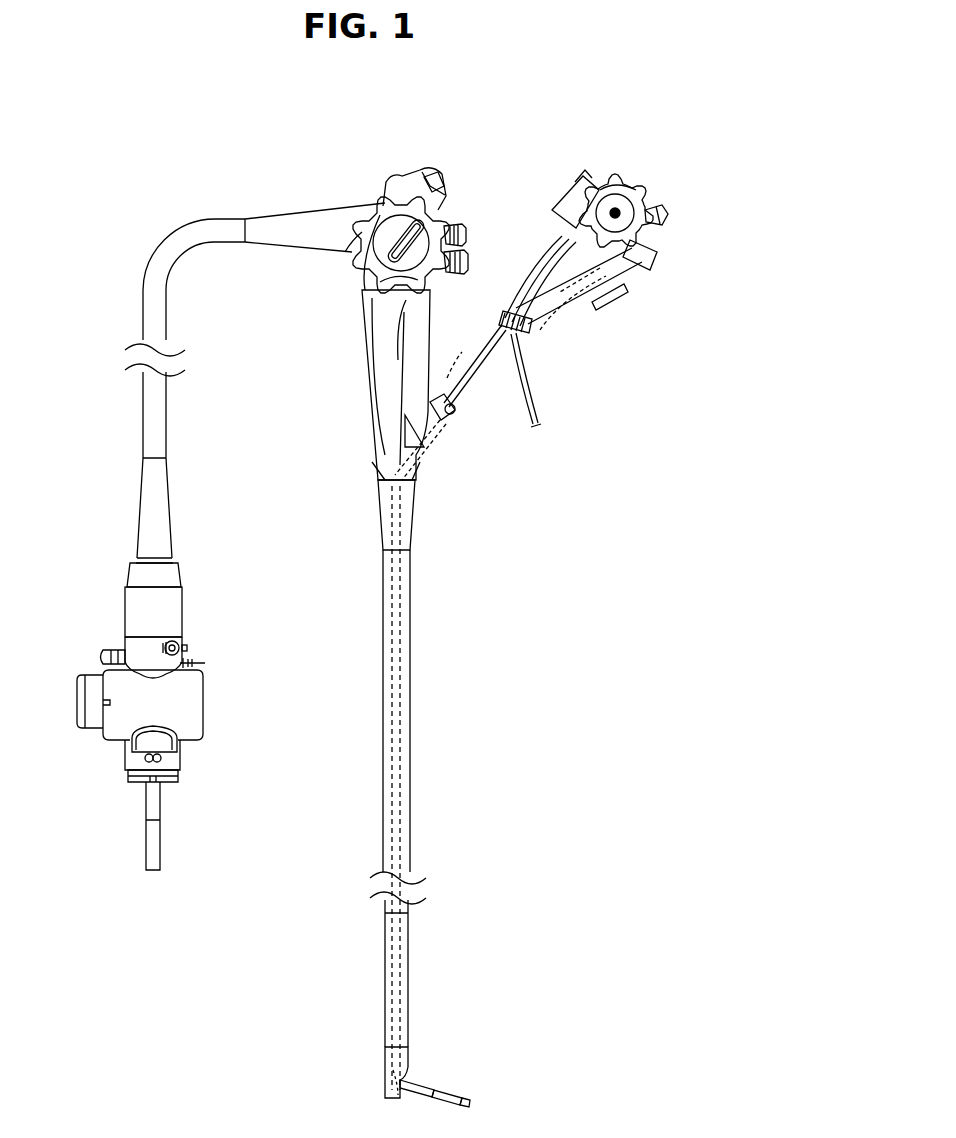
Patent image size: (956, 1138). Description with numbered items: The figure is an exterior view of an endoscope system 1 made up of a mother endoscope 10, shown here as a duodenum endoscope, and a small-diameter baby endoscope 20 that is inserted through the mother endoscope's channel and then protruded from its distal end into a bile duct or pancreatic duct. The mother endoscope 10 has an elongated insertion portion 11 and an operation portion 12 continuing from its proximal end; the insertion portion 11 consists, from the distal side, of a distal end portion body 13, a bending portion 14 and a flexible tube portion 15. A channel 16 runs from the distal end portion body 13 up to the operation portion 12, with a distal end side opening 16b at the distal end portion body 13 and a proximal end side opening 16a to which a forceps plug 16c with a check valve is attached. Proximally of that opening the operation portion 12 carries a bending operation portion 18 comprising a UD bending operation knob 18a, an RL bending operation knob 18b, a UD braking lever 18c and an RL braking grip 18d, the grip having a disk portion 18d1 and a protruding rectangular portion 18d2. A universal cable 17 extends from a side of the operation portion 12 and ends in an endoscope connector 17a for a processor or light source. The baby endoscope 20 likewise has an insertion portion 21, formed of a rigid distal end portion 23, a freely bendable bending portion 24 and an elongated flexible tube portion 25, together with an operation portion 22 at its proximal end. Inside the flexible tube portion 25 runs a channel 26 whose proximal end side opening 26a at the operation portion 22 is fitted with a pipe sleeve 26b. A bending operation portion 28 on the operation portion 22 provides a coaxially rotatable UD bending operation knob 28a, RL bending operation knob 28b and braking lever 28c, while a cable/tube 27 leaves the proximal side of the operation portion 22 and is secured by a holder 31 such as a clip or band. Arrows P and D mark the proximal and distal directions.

The endoscope system 1 is at (291, 150).
The mother endoscope 10 is at (486, 232).
The insertion portion 11 is at (376, 799).
The operation portion 12 is at (370, 388).
The distal end portion body 13 is at (382, 1070).
The bending portion 14 is at (382, 978).
The flexible tube portion 15 is at (380, 762).
The channel 16 is at (410, 700).
The proximal end side opening 16a is at (448, 384).
The distal end side opening 16b is at (356, 1094).
The forceps plug 16c is at (462, 414).
The universal cable 17 is at (142, 320).
The endoscope connector 17a is at (124, 619).
The bending operation portion 18 is at (370, 248).
The UD bending operation knob 18a is at (372, 236).
The RL bending operation knob 18b is at (378, 260).
The UD braking lever 18c is at (446, 262).
The RL braking grip 18d is at (398, 265).
The disk portion 18d1 is at (432, 278).
The rectangular portion 18d2 is at (425, 195).
The baby endoscope 20 is at (637, 167).
The insertion portion 21 is at (469, 1048).
The operation portion 22 is at (536, 330).
The distal end portion 23 is at (489, 1076).
The bending portion 24 is at (461, 1094).
The flexible tube portion 25 is at (468, 392).
The channel 26 is at (606, 295).
The proximal end side opening 26a is at (606, 282).
The pipe sleeve 26b is at (645, 266).
The cable/tube 27 is at (518, 300).
The bending operation portion 28 is at (657, 167).
The UD bending operation knob 28a is at (618, 196).
The RL bending operation knob 28b is at (645, 212).
The braking lever 28c is at (690, 174).
The holder 31 is at (522, 346).